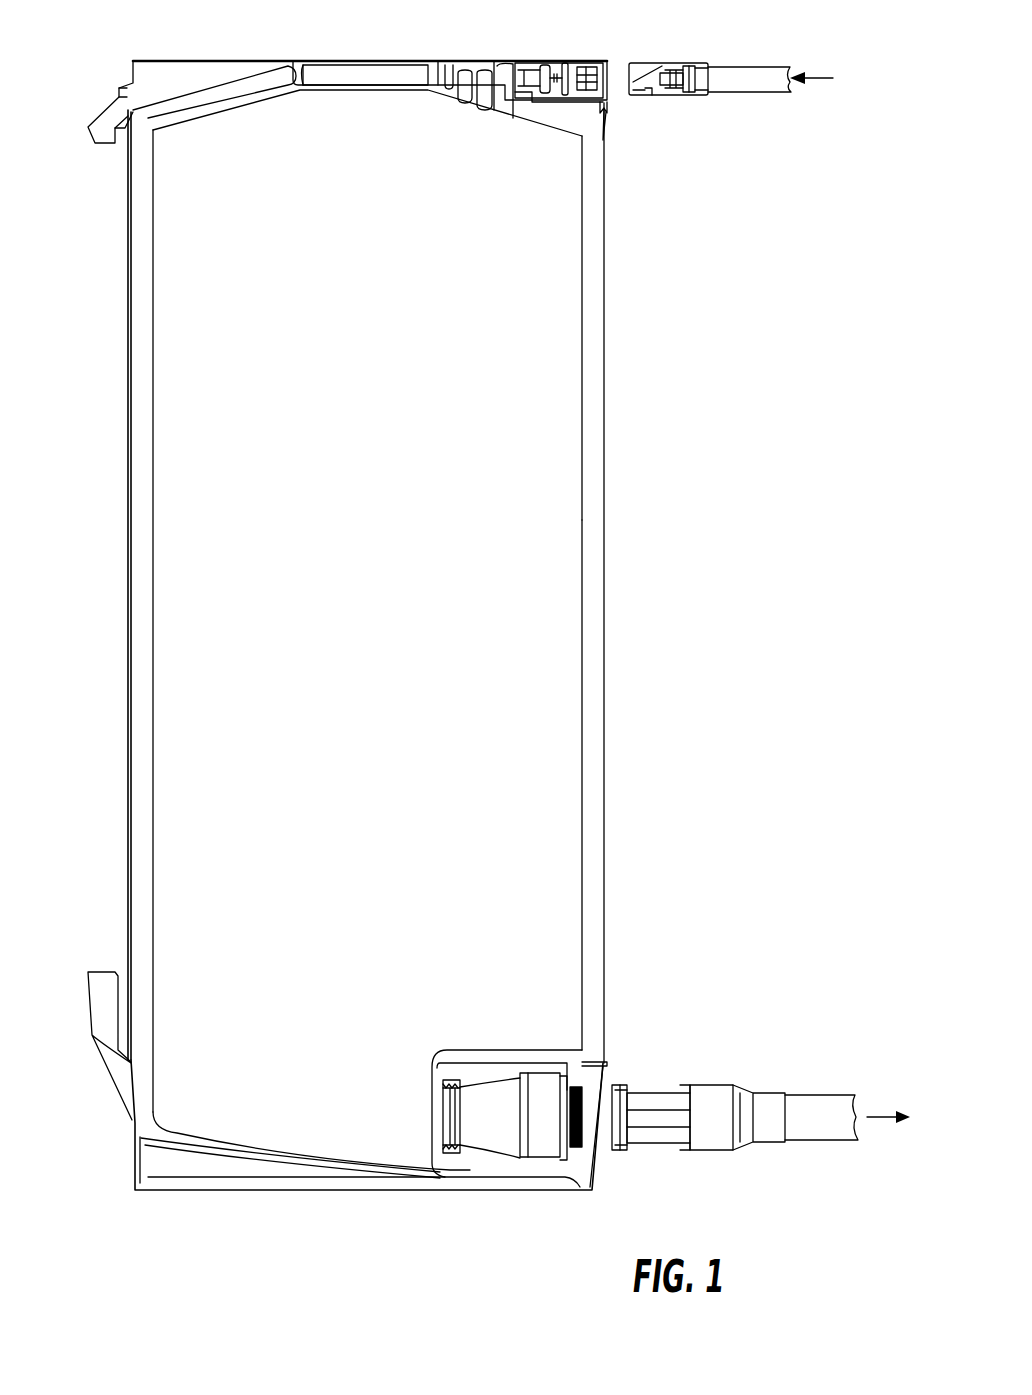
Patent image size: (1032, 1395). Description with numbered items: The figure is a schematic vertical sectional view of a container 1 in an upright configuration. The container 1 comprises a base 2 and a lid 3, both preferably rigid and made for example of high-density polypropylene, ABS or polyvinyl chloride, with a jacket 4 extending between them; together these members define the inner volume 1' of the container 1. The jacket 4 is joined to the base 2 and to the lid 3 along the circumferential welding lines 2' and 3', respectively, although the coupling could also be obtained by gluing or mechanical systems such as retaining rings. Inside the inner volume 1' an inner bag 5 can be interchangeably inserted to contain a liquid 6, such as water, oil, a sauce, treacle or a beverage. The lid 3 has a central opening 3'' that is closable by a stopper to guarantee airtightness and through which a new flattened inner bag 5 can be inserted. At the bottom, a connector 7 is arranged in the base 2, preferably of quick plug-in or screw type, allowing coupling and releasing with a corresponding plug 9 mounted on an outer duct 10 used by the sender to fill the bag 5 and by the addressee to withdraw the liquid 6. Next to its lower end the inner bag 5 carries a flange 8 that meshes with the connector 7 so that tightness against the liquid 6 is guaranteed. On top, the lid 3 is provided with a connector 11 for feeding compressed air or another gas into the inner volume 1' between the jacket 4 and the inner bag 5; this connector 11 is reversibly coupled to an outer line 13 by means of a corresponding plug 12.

The container 1 is at (320, 560).
The inner volume 1' is at (622, 785).
The base 2 is at (337, 1092).
The circumferential welding line 2' is at (614, 1084).
The lid 3 is at (347, 74).
The circumferential welding line 3' is at (633, 127).
The central opening 3'' is at (370, 42).
The jacket 4 is at (604, 522).
The inner bag 5 is at (152, 297).
The liquid 6 is at (570, 293).
The connector 7 is at (490, 1135).
The flange 8 is at (440, 1130).
The plug 9 is at (705, 1092).
The outer duct 10 is at (826, 1100).
The connector 11 is at (572, 72).
The plug 12 is at (672, 64).
The outer line 13 is at (750, 90).